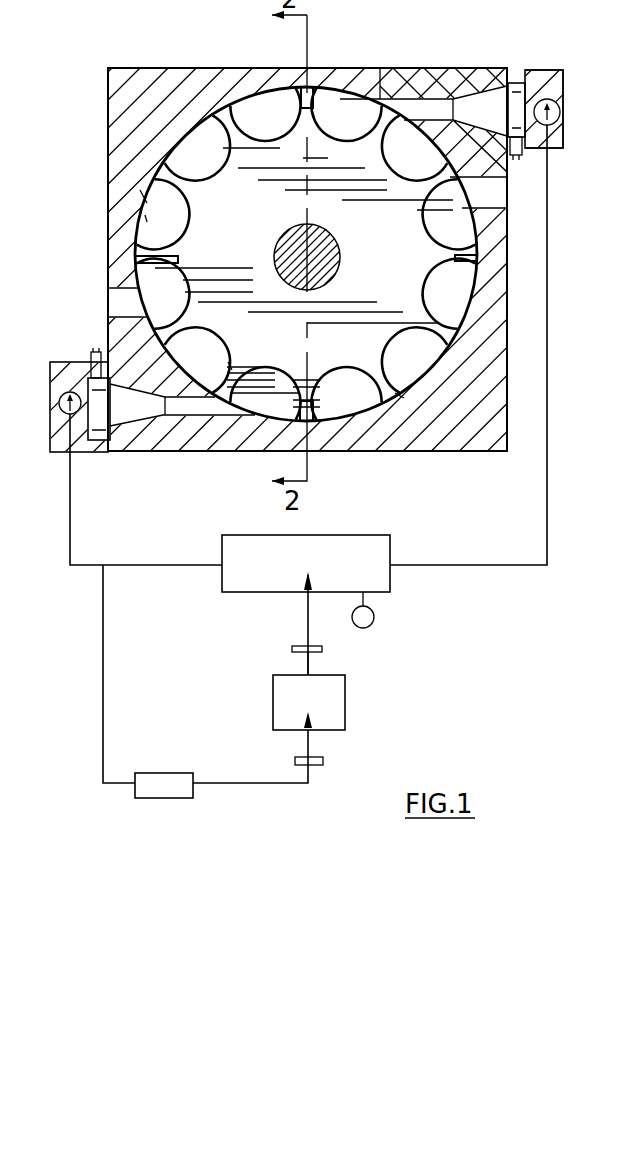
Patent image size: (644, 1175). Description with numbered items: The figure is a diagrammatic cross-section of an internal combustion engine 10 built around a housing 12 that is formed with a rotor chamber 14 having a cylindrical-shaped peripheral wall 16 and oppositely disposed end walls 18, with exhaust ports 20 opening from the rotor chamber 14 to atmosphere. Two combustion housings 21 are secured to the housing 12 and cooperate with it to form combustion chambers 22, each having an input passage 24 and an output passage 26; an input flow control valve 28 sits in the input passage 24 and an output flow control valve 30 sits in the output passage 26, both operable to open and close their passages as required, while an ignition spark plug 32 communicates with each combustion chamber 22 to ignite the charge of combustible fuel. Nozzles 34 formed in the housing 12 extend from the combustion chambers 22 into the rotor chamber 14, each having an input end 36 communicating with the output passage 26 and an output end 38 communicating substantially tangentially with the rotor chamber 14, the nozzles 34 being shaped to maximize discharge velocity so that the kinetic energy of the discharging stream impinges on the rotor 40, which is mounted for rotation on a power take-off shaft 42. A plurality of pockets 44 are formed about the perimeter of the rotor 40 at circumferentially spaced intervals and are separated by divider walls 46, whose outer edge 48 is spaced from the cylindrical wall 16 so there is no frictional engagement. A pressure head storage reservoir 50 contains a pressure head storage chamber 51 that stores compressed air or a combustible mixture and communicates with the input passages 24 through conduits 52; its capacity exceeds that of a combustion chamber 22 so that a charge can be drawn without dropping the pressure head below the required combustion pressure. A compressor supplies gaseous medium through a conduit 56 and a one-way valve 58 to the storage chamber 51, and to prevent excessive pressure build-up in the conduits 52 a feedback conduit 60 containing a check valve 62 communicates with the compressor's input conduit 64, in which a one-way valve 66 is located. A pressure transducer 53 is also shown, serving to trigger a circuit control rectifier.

The internal combustion engine 10 is at (147, 60).
The housing 12 is at (237, 77).
The rotor chamber 14 is at (180, 160).
The cylindrical-shaped peripheral wall 16 is at (147, 203).
The end walls 18 is at (147, 222).
The exhaust ports 20 is at (495, 193).
The combustion housings 21 is at (537, 75).
The combustion chambers 22 is at (517, 88).
The input passage 24 is at (550, 80).
The output passage 26 is at (500, 107).
The input flow control valve 28 is at (546, 133).
The output flow control valve 30 is at (470, 95).
The ignition spark plug 32 is at (518, 153).
The nozzles 34 is at (433, 102).
The input end 36 is at (137, 416).
The output end 38 is at (210, 407).
The rotor 40 is at (160, 135).
The power take-off shaft 42 is at (274, 257).
The pockets 44 is at (258, 377).
The divider walls 46 is at (300, 397).
The outer edge 48 is at (398, 400).
The pressure head storage reservoir 50 is at (338, 535).
The pressure head storage chamber 51 is at (316, 561).
The conduits 52 is at (548, 410).
The pressure transducer 53 is at (375, 617).
The conduit 56 is at (303, 662).
The one-way valve 58 is at (310, 646).
The feedback conduit 60 is at (103, 652).
The check valve 62 is at (180, 772).
The input conduit 64 is at (312, 775).
The one-way valve 66 is at (320, 758).